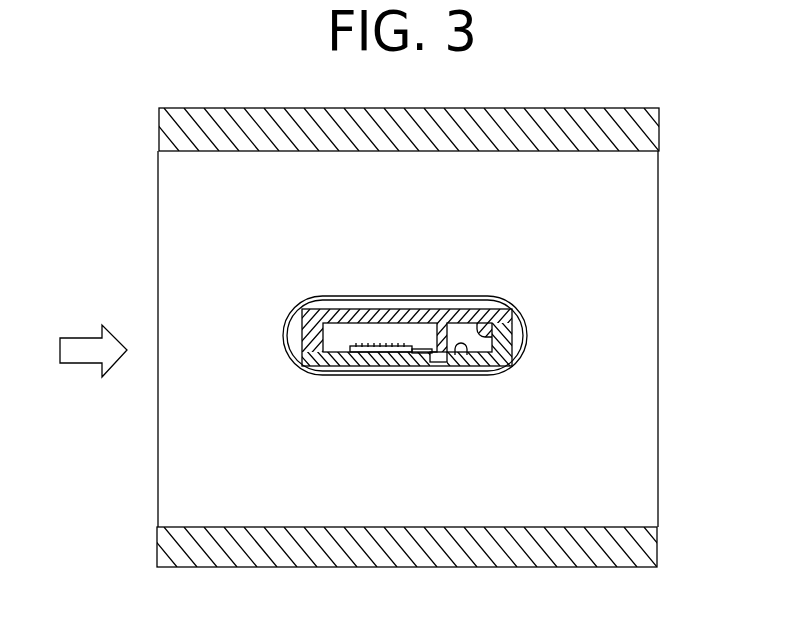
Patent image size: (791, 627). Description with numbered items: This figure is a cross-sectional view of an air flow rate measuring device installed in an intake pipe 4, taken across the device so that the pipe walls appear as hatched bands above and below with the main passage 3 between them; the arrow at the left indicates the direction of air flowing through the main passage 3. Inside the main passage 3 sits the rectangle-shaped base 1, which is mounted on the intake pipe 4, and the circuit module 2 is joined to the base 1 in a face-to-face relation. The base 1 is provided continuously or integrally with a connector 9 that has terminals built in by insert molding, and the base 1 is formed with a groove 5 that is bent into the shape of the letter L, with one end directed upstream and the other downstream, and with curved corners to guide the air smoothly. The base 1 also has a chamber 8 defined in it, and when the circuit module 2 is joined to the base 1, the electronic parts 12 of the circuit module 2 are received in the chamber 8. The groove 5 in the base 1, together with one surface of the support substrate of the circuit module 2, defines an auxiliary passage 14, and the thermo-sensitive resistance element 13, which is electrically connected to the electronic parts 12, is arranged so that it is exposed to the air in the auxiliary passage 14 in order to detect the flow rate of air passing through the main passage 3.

The base 1 is at (327, 313).
The circuit module 2 is at (508, 367).
The main passage 3 is at (628, 520).
The intake pipe 4 is at (632, 133).
The groove 5 is at (479, 335).
The chamber 8 is at (421, 330).
The connector 9 is at (500, 300).
The electronic parts 12 is at (384, 342).
The thermo-sensitive resistance element 13 is at (450, 348).
The auxiliary passage 14 is at (470, 345).